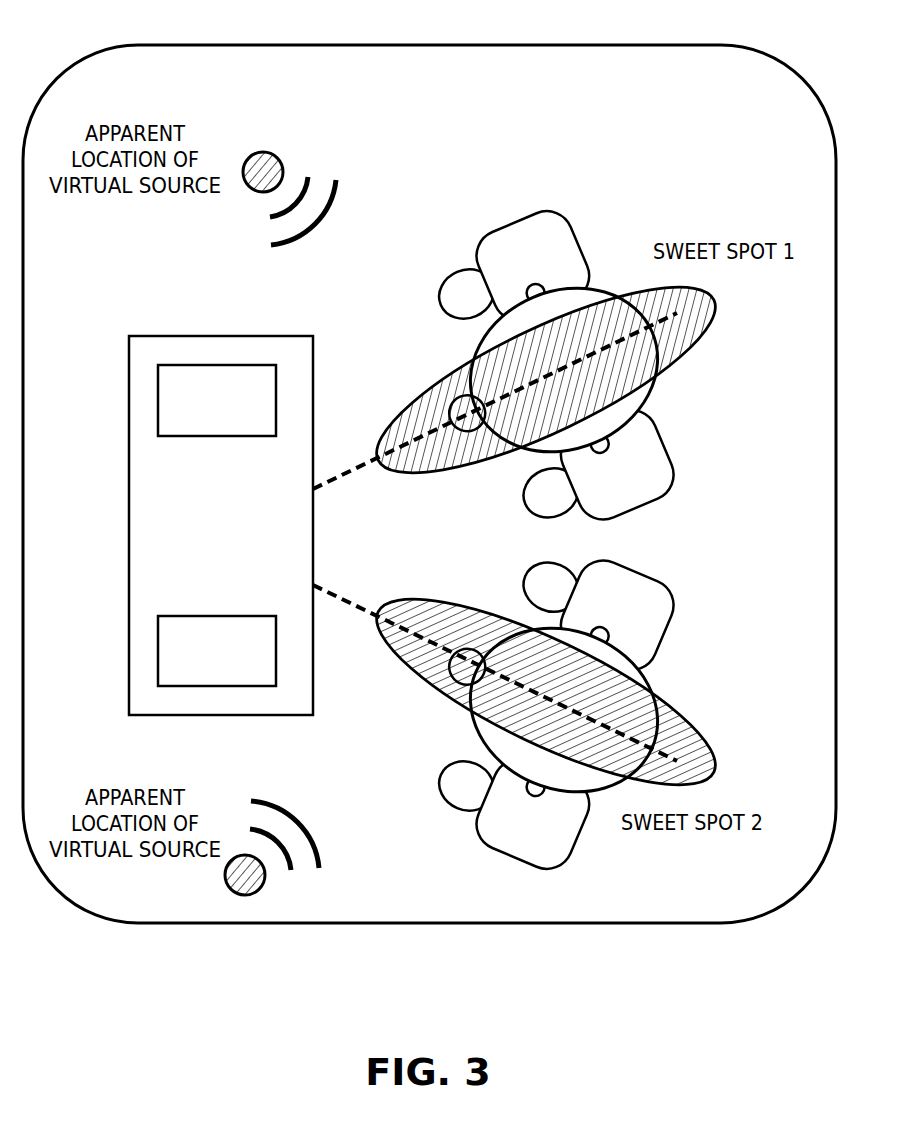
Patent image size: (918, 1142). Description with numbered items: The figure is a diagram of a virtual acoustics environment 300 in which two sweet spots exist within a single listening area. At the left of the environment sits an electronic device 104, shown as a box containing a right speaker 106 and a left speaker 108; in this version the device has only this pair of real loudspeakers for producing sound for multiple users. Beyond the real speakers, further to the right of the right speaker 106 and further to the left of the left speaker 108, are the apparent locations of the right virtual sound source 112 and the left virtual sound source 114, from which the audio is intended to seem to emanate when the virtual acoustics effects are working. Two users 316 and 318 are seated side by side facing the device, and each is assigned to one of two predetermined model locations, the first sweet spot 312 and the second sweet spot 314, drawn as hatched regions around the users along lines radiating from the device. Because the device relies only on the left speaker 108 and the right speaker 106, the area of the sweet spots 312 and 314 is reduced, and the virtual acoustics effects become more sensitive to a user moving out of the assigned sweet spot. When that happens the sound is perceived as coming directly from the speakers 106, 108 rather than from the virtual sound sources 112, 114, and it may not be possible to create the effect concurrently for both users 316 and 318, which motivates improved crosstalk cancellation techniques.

The virtual acoustics environment 300 is at (791, 73).
The electronic device 104 is at (203, 560).
The right speaker 106 is at (158, 390).
The left speaker 108 is at (158, 643).
The right virtual sound source 112 is at (280, 158).
The left virtual sound source 114 is at (262, 884).
The predetermined model location 312 is at (683, 361).
The predetermined model location 314 is at (693, 722).
The user 316 is at (573, 287).
The user 318 is at (623, 648).